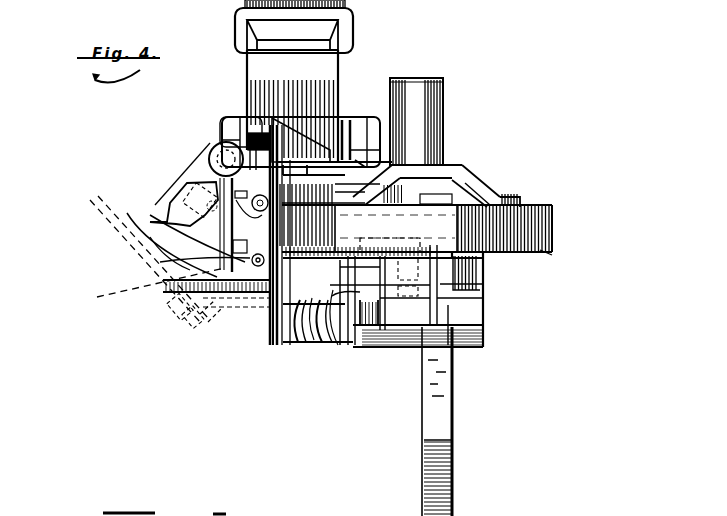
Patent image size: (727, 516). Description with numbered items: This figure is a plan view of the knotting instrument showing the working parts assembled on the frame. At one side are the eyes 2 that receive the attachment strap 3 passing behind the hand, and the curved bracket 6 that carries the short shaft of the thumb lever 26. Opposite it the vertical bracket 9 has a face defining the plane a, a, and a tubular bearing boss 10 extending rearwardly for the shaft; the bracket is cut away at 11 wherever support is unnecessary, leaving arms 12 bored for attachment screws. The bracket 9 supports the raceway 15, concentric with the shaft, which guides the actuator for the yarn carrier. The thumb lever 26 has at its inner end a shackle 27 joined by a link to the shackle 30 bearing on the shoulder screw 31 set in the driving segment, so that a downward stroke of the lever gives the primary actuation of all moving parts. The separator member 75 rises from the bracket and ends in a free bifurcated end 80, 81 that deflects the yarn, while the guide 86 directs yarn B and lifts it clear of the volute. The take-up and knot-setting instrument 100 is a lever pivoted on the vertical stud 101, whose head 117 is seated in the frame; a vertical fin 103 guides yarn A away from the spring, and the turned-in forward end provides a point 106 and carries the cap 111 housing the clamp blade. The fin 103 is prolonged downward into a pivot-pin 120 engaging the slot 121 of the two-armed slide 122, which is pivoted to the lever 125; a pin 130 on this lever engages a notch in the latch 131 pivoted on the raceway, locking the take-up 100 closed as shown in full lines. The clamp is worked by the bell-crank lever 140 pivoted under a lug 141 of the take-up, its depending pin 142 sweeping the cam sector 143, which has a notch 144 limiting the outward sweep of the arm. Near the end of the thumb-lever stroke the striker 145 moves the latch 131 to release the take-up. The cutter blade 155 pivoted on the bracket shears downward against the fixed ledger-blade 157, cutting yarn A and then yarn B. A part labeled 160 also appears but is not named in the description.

The eyes 2 is at (347, 115).
The attachment strap 3 is at (298, 106).
The curved bracket 6 is at (338, 348).
The vertical bracket 9 is at (451, 162).
The bearing boss 10 is at (440, 84).
The cut away portions 11 is at (454, 180).
The arms 12 is at (356, 162).
The raceway 15 is at (553, 252).
The thumb lever 26 is at (454, 426).
The shackle 27 is at (484, 299).
The shackle 30 is at (484, 266).
The shoulder screw 31 is at (484, 285).
The separator member 75 is at (263, 330).
The bifurcated end 80 is at (292, 322).
The bifurcated end 81 is at (316, 346).
The guide 86 is at (258, 306).
The yarn take-up and knot-setting instrument 100 is at (145, 240).
The vertical stud 101 is at (205, 154).
The vertical fin 103 is at (153, 221).
The point 106 is at (172, 296).
The cap 111 is at (233, 300).
The head 117 is at (223, 152).
The pivot-pin 120 is at (244, 138).
The slot 121 is at (163, 262).
The two-armed slide 122 is at (90, 290).
The lever 125 is at (374, 257).
The pin 130 is at (326, 345).
The latch 131 is at (338, 342).
The bell-crank lever 140 is at (216, 322).
The lug 141 is at (185, 313).
The depending pin 142 is at (128, 307).
The cam sector 143 is at (130, 217).
The notch 144 is at (154, 220).
The striker 145 is at (388, 333).
The cutter blade 155 is at (279, 150).
The ledger-blade 157 is at (252, 148).
The wall 160 is at (463, 174).
The plane a is at (555, 205).